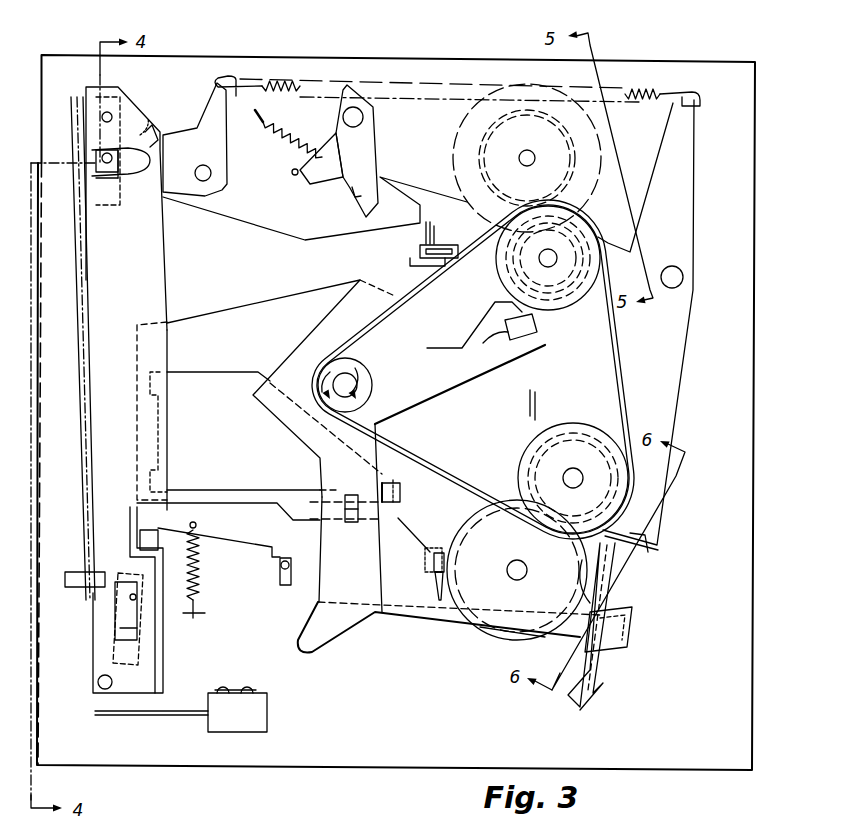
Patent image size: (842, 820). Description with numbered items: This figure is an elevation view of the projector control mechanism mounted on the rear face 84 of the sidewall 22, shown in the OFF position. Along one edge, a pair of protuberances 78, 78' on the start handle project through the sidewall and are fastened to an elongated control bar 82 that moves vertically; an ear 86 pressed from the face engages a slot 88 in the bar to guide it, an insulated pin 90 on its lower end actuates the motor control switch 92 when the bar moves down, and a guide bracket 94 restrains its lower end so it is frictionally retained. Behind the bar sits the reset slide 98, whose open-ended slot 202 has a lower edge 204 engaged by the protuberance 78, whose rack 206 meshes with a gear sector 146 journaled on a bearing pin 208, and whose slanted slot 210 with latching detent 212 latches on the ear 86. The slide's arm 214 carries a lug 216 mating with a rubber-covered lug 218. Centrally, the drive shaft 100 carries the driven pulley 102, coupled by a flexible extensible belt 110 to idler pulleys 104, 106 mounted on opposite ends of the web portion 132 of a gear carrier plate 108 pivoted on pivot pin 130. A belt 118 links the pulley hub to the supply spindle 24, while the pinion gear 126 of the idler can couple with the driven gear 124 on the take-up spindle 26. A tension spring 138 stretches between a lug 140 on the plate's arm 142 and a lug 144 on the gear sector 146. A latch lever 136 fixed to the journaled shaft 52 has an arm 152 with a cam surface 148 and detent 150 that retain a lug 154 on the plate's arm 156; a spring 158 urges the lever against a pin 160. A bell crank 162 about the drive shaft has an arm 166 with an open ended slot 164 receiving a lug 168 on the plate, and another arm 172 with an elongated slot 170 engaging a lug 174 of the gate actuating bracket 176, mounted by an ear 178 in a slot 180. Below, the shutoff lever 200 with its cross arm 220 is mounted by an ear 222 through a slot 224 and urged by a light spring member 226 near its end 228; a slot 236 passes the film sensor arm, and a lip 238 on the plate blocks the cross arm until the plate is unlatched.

The sidewall 22 is at (655, 770).
The supply spindle 24 is at (530, 161).
The take-up spindle 26 is at (521, 575).
The journaled shaft 52 is at (364, 111).
The protuberance 78 is at (98, 150).
The protuberance 78' is at (81, 105).
The control bar 82 is at (165, 345).
The rear face 84 is at (436, 73).
The ear 86 is at (132, 629).
The slot 88 is at (136, 599).
The insulated pin 90 is at (98, 685).
The motor control switch 92 is at (97, 715).
The guide bracket 94 is at (75, 584).
The reset slide 98 is at (84, 408).
The drive shaft 100 is at (352, 380).
The driven pulley 102 is at (360, 389).
The idler pulley 104 is at (548, 318).
The idler pulley 106 is at (566, 426).
The gear carrier plate 108 is at (670, 380).
The flexible extensible belt 110 is at (612, 351).
The belt 118 is at (631, 177).
The driven gear 124 is at (479, 631).
The pinion gear 126 is at (625, 430).
The pivot pin 130 is at (680, 274).
The web portion 132 is at (530, 414).
The latch lever 136 is at (360, 95).
The tension spring 138 is at (300, 87).
The lug 140 is at (689, 113).
The arm 142 is at (657, 215).
The lug 144 is at (223, 77).
The gear sector 146 is at (184, 156).
The cam surface 148 is at (357, 203).
The detent 150 is at (352, 193).
The arm 152 is at (366, 135).
The lug 154 is at (327, 181).
The arm 156 is at (403, 208).
The spring 158 is at (263, 124).
The pin 160 is at (292, 172).
The bell crank 162 is at (433, 381).
The open ended slot 164 is at (486, 346).
The arm 166 is at (482, 332).
The lug 168 is at (534, 325).
The elongated slot 170 is at (349, 522).
The arm 172 is at (330, 600).
The lug 174 is at (346, 518).
The gate actuating bracket 176 is at (221, 381).
The ear 178 is at (402, 489).
The slot 180 is at (402, 498).
The shutoff lever 200 is at (400, 609).
The open-ended slot 202 is at (127, 172).
The lower edge 204 is at (104, 175).
The rack 206 is at (150, 121).
The bearing pin 208 is at (209, 179).
The slot 210 is at (122, 608).
The latching detent 212 is at (120, 598).
The arm 214 is at (225, 305).
The lug 216 is at (410, 264).
The rubber-covered lug 218 is at (437, 249).
The cross arm 220 is at (596, 666).
The ear 222 is at (431, 548).
The slot 224 is at (438, 594).
The light spring member 226 is at (202, 567).
The end 228 is at (223, 528).
The slot 236 is at (279, 578).
The lip 238 is at (642, 543).